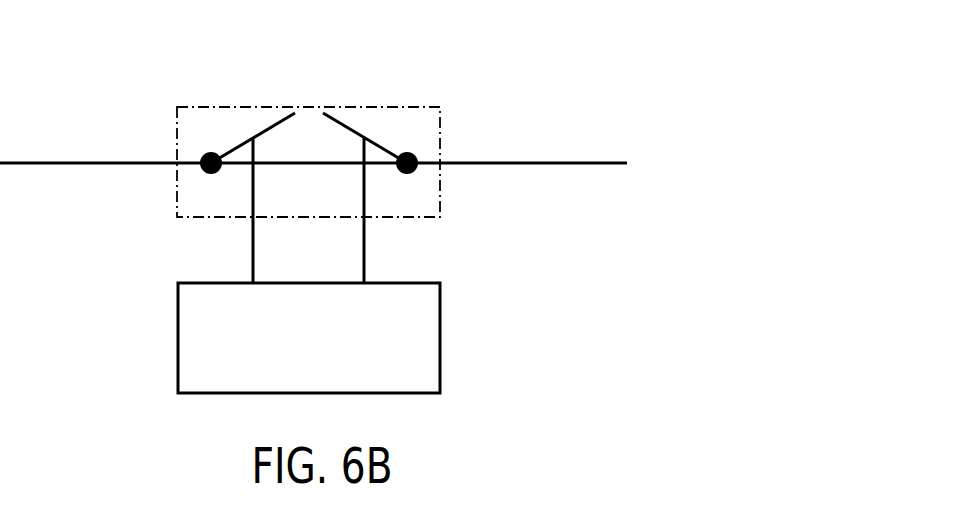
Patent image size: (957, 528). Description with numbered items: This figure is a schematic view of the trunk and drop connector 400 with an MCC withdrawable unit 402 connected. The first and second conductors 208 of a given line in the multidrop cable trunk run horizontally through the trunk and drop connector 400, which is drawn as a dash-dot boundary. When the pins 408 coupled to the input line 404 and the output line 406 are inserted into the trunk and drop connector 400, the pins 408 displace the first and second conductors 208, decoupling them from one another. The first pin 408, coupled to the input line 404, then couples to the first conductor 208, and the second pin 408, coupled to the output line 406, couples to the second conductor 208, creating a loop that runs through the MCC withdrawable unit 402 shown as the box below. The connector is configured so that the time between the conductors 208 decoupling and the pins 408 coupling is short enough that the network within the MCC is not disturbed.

The conductors 208 is at (271, 127).
The trunk and drop connector 400 is at (395, 105).
The MCC withdrawable unit 402 is at (440, 337).
The input line 404 is at (252, 237).
The output line 406 is at (365, 237).
The pins 408 is at (363, 178).